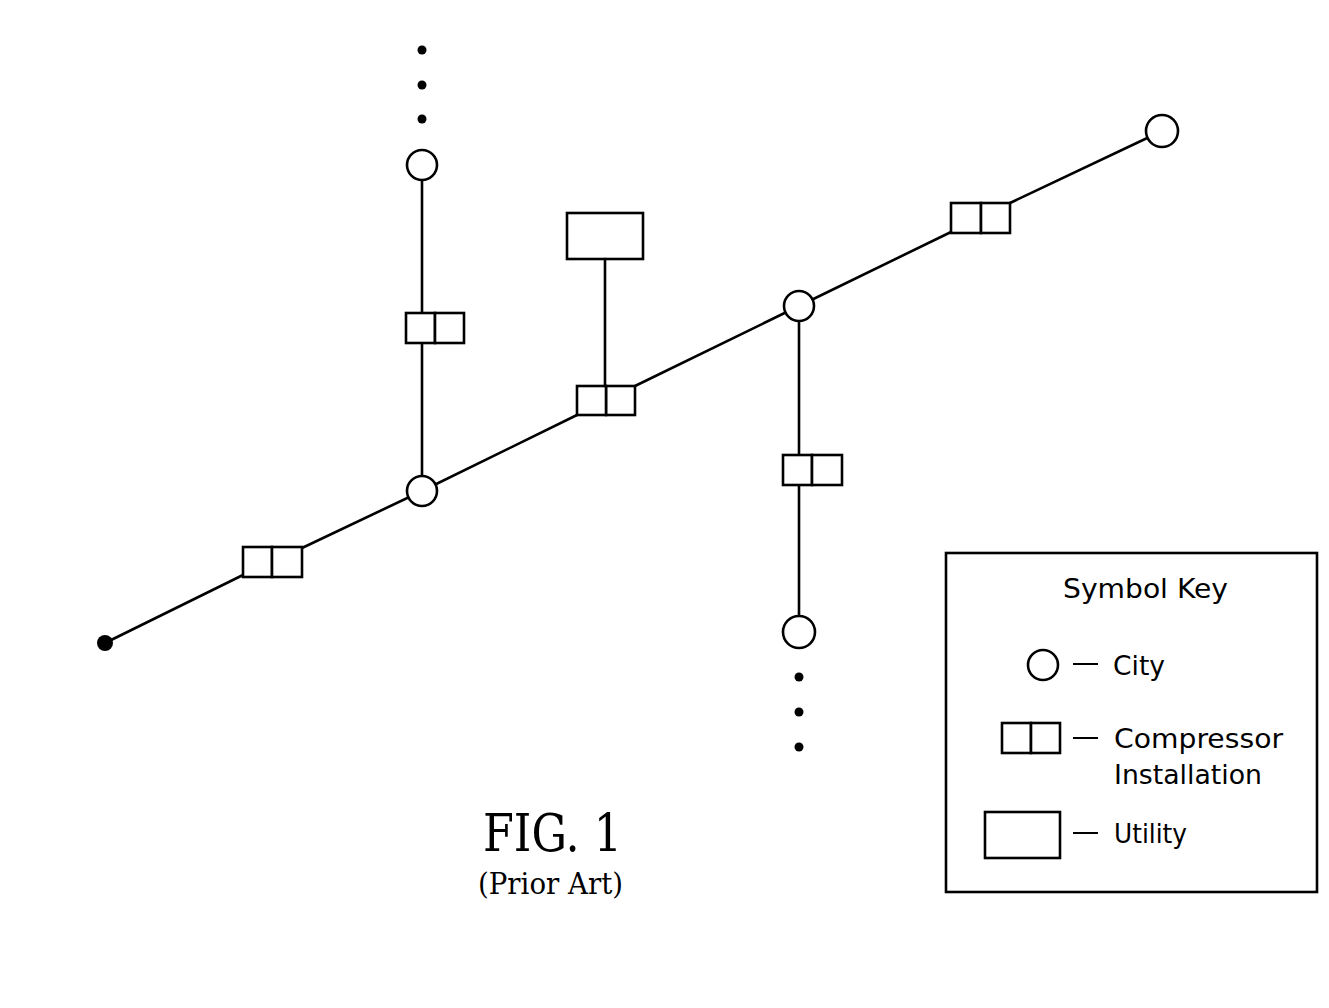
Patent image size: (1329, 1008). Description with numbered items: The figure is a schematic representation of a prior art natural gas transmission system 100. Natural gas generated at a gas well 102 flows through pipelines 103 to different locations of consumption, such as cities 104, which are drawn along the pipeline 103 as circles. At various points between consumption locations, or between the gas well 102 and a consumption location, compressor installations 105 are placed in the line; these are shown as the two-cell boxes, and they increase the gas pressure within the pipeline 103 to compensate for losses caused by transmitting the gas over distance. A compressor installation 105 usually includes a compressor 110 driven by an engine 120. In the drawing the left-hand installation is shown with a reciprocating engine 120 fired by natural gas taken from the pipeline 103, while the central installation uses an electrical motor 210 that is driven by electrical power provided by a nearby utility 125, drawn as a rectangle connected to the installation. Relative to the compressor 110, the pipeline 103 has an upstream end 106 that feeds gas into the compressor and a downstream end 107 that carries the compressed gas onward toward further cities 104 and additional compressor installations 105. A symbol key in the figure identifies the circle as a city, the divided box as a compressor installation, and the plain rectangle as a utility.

The natural gas transmission system 100 is at (242, 281).
The gas well 102 is at (107, 650).
The pipeline 103 is at (177, 607).
The city 104 is at (407, 159).
The compressor installation 105 is at (268, 594).
The upstream end of the pipeline 106 is at (502, 457).
The downstream end of the pipeline 107 is at (710, 348).
The compressor 110 is at (285, 547).
The reciprocating engine 120 is at (258, 547).
The utility 125 is at (605, 212).
The electrical motor 210 is at (593, 385).